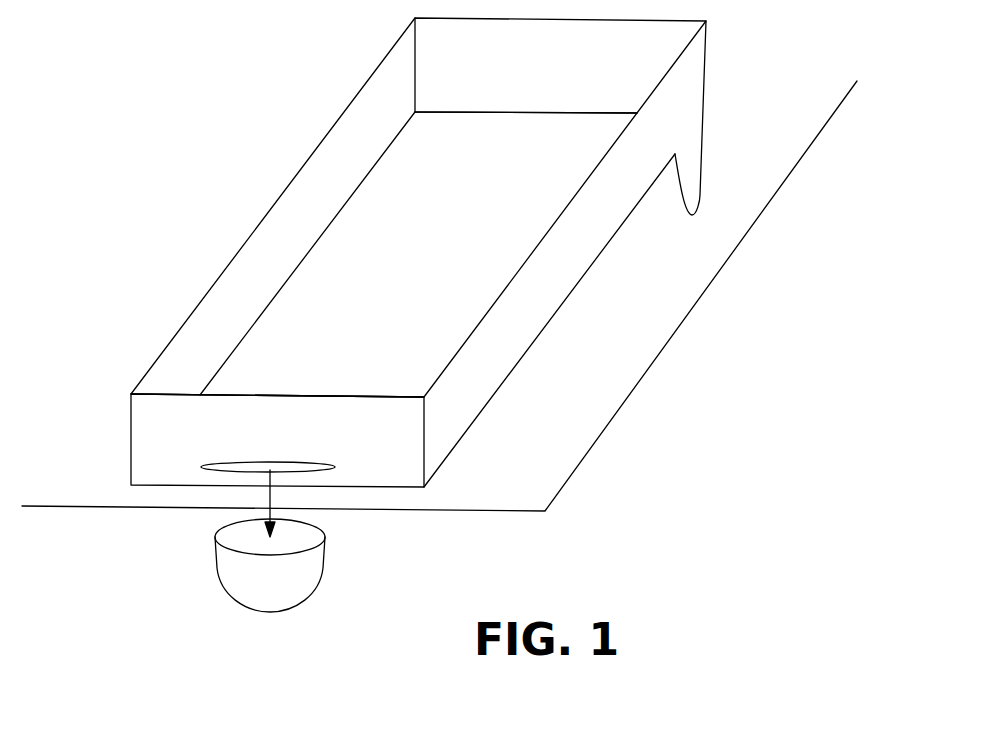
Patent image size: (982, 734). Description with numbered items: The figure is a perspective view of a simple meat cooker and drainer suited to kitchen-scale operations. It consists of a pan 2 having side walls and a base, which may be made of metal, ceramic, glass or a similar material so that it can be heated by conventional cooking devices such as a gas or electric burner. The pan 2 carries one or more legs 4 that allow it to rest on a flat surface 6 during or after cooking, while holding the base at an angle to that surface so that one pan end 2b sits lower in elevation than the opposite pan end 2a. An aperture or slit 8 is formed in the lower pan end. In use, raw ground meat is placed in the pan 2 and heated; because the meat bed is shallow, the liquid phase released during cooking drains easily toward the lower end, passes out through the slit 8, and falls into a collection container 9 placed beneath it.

The pan 2 is at (310, 157).
The pan end 2a is at (296, 391).
The pan end 2b is at (543, 140).
The leg 4 is at (693, 195).
The flat surface 6 is at (592, 410).
The aperture or slit 8 is at (323, 468).
The collection container 9 is at (315, 587).